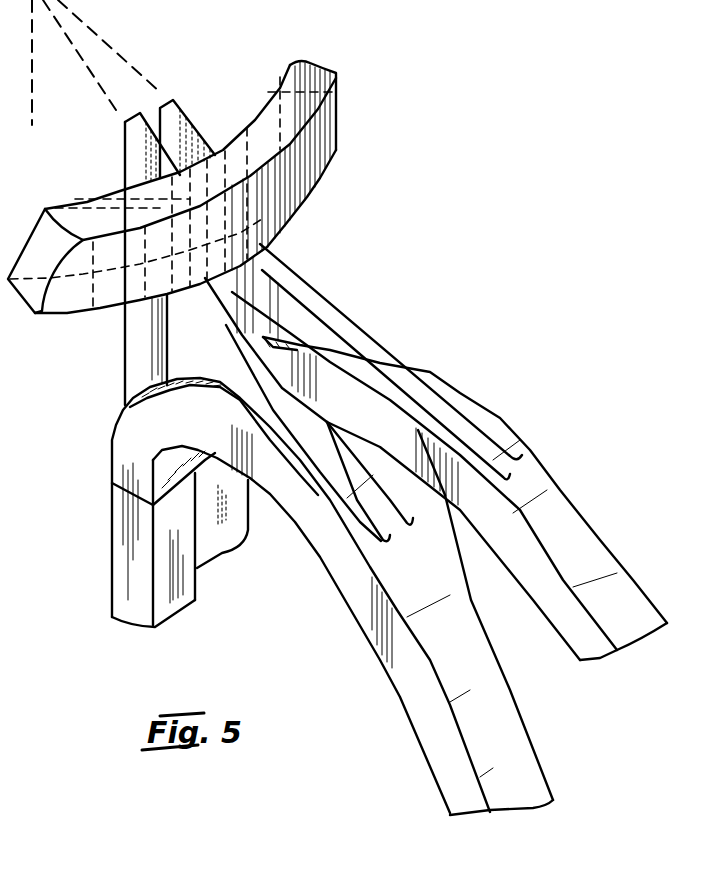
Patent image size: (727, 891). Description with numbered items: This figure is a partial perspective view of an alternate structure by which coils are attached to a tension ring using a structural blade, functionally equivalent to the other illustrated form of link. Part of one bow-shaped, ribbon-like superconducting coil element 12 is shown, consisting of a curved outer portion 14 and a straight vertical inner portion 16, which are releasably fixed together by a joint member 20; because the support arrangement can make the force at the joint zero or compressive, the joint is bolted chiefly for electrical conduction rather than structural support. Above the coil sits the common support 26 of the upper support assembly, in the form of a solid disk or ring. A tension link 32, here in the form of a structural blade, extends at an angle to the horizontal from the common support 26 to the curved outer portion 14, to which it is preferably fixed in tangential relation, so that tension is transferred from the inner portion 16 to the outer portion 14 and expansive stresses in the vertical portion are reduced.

The coil element 12 is at (478, 667).
The curved outer portion 14 is at (533, 477).
The straight vertical inner portion 16 is at (122, 567).
The joint member 20 is at (112, 490).
The common support 26 is at (305, 177).
The tension link 32 is at (327, 300).